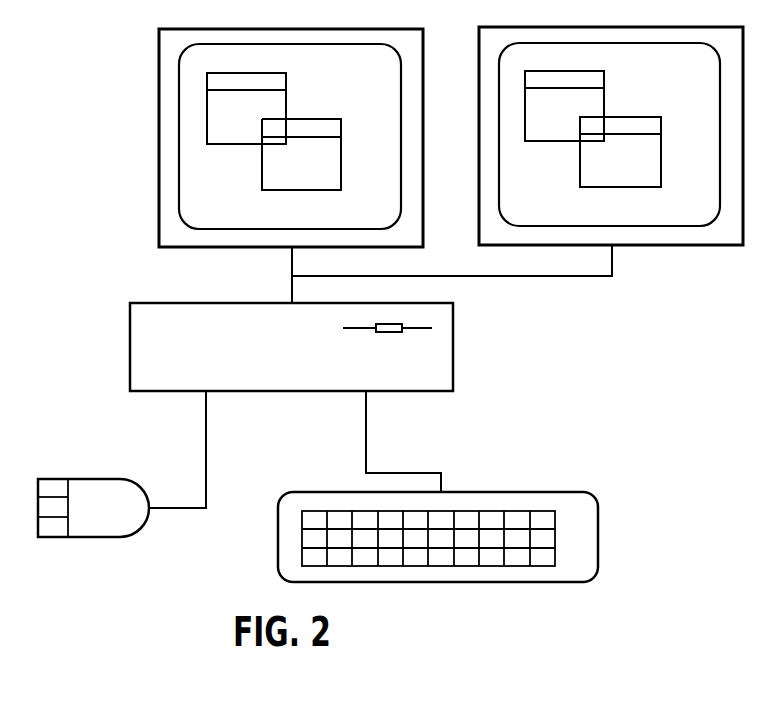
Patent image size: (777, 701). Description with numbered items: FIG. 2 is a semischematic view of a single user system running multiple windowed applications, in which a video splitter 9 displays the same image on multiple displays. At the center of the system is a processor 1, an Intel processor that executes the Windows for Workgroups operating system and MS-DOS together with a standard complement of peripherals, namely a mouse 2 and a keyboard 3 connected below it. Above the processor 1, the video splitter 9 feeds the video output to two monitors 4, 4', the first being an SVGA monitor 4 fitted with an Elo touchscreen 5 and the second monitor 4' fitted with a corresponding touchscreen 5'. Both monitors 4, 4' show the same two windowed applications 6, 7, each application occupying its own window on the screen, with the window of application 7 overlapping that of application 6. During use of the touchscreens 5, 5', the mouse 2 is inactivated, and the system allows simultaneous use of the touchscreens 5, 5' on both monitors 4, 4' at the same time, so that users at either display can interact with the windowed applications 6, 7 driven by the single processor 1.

The processor 1 is at (291, 347).
The mouse 2 is at (122, 464).
The keyboard 3 is at (438, 486).
The SVGA monitor 4 is at (291, 138).
The monitor 4' is at (611, 136).
The touchscreen 5 is at (290, 136).
The touchscreen 5' is at (609, 134).
The windowed application 6 is at (405, 107).
The windowed application 7 is at (461, 153).
The video splitter 9 is at (440, 274).